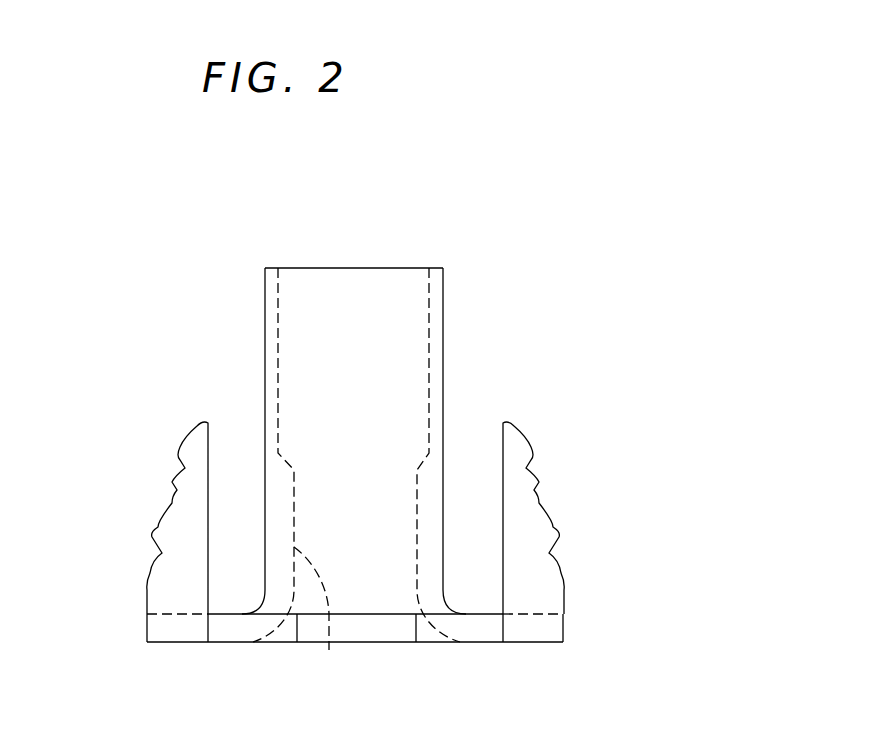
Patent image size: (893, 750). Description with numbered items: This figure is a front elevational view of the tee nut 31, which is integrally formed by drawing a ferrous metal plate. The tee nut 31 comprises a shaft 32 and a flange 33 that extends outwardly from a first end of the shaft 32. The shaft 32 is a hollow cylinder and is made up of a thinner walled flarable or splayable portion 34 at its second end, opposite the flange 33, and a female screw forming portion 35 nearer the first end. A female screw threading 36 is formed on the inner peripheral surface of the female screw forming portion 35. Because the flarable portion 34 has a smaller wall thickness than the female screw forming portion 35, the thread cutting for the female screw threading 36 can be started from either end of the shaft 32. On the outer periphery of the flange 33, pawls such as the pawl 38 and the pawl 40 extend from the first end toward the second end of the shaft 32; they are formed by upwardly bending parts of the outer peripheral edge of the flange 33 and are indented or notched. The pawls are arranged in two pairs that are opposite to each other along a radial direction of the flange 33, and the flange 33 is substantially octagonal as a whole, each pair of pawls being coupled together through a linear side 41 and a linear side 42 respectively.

The tee nut 31 is at (194, 237).
The shaft 32 is at (444, 298).
The flange 33 is at (470, 633).
The flarable portion 34 is at (264, 310).
The female screw forming portion 35 is at (266, 497).
The female screw threading 36 is at (320, 618).
The pawl 38 is at (177, 490).
The pawl 40 is at (535, 487).
The linear side 41 is at (147, 627).
The linear side 42 is at (563, 623).